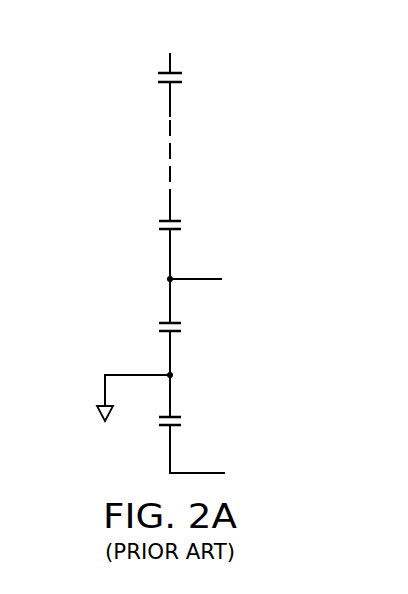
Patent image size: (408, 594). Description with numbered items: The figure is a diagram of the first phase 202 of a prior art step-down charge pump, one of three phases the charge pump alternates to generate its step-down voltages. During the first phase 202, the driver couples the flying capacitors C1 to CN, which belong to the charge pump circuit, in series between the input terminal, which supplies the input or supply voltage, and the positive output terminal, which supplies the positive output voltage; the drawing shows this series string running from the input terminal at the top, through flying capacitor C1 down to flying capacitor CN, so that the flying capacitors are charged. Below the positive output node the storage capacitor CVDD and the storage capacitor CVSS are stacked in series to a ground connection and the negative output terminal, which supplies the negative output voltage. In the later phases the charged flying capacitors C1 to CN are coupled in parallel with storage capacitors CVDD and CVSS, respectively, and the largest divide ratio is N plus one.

The first phase 202 is at (88, 56).
The flying capacitor C1 is at (186, 79).
The flying capacitor CN is at (187, 227).
The storage capacitor CVDD is at (200, 327).
The storage capacitor CVSS is at (199, 422).